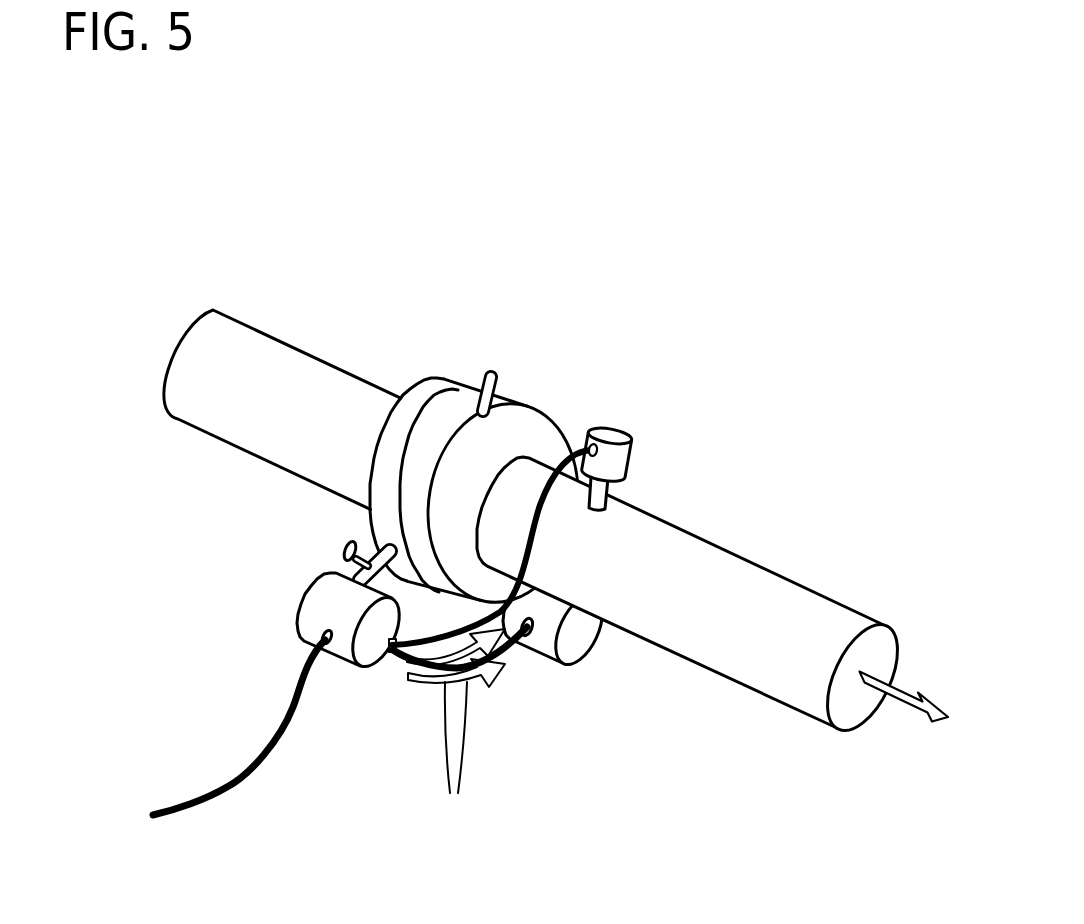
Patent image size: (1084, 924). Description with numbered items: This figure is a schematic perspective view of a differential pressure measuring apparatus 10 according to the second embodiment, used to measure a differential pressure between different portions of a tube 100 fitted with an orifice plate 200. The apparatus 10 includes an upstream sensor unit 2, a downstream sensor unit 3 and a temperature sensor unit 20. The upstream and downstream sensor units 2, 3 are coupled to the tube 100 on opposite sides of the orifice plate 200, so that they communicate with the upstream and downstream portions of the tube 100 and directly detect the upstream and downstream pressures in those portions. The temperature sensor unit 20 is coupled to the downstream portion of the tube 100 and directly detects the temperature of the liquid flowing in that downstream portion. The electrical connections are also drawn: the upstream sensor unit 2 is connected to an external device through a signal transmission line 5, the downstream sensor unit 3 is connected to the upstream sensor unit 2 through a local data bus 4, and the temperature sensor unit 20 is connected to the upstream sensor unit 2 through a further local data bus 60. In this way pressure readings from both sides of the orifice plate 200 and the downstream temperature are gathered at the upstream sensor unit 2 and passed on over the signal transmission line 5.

The tube 100 is at (320, 370).
The orifice plate 200 is at (490, 372).
The local data bus 60 is at (574, 440).
The temperature sensor unit 20 is at (618, 458).
The upstream sensor unit 2 is at (318, 580).
The downstream sensor unit 3 is at (583, 643).
The local data bus 4 is at (520, 640).
The signal transmission line 5 is at (188, 808).
The differential pressure measuring apparatus 10 is at (196, 632).